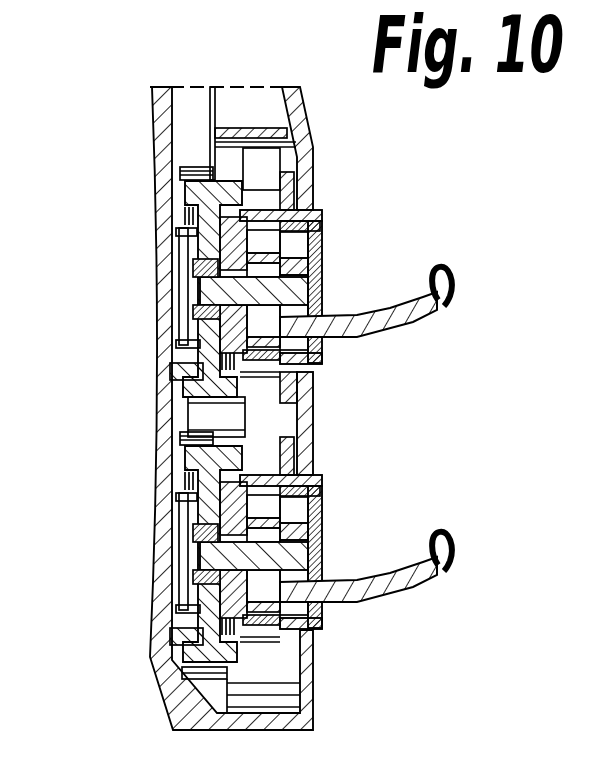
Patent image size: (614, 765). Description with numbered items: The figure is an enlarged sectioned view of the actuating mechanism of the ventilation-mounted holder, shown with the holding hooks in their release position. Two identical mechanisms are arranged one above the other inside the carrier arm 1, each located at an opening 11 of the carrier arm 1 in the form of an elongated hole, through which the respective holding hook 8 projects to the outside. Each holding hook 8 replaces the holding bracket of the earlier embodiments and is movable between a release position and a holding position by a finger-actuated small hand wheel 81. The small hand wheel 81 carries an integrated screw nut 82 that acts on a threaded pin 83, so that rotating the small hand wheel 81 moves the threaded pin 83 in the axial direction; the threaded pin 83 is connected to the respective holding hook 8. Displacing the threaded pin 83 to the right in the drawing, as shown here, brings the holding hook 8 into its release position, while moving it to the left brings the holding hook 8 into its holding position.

The carrier arm 1 is at (152, 133).
The holding hook 8 is at (440, 312).
The opening 11 is at (302, 205).
The small hand wheel 81 is at (183, 197).
The screw nut 82 is at (196, 308).
The threaded pin 83 is at (215, 287).